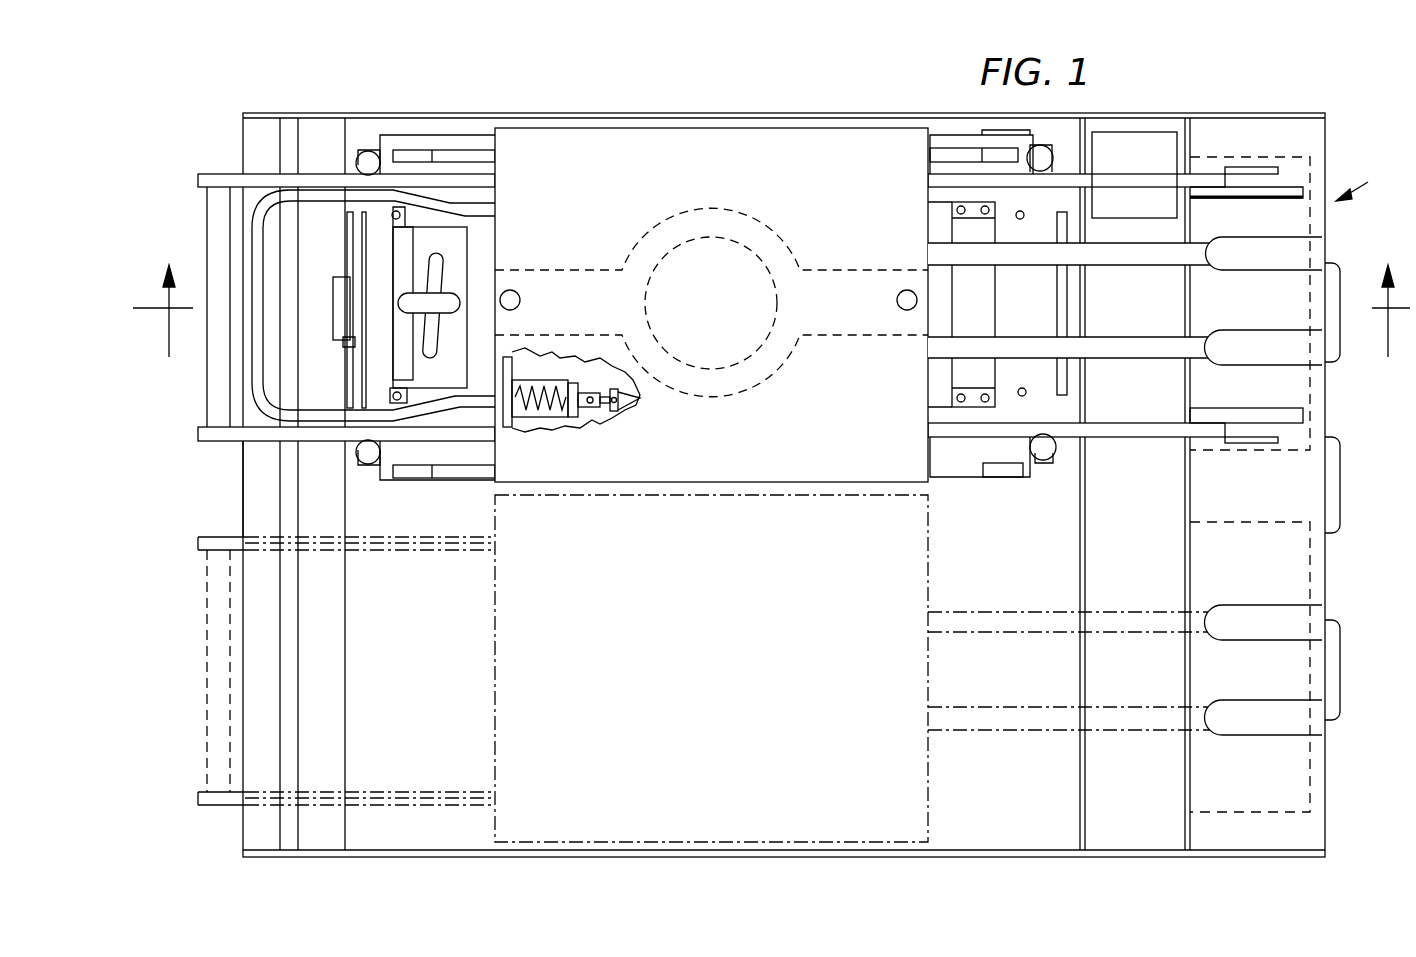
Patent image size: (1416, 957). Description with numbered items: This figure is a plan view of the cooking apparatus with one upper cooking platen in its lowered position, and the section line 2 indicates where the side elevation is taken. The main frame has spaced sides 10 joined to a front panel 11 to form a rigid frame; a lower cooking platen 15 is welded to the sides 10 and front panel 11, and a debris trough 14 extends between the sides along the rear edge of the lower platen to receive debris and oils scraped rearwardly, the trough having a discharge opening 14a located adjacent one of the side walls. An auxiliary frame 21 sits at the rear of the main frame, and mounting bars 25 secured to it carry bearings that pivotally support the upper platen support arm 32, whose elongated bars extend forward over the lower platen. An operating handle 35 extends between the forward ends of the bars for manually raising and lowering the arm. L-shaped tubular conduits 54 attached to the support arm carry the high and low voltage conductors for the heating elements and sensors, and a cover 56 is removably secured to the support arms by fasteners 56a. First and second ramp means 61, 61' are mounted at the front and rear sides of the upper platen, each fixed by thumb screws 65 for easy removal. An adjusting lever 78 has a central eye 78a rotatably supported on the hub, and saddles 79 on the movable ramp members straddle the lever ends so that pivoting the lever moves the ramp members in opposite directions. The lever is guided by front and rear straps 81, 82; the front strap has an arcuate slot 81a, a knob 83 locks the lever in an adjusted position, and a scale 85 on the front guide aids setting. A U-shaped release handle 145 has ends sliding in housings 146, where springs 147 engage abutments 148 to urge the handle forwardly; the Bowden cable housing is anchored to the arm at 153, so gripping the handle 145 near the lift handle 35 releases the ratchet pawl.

The sides 10 is at (455, 857).
The front panel 11 is at (258, 475).
The debris trough 14 is at (1148, 544).
The discharge opening 14a is at (1112, 132).
The lower cooking platen 15 is at (998, 549).
The auxiliary frame 21 is at (1365, 173).
The mounting bars 25 is at (1300, 185).
The upper platen support arm 32 is at (290, 180).
The operating handle 35 is at (218, 222).
The tubular conduits 54 is at (1160, 347).
The cover 56 is at (840, 152).
The fasteners 56a is at (906, 290).
The first ramp means 61 is at (334, 268).
The second ramp means 61' is at (1101, 308).
The thumb screws 65 is at (368, 158).
The adjusting lever 78 is at (465, 272).
The central eye 78a is at (722, 225).
The saddles 79 is at (348, 307).
The front strap 81 is at (452, 234).
The arcuate slot 81a is at (498, 330).
The rear strap 82 is at (970, 375).
The knob 83 is at (440, 300).
The scale 85 is at (412, 237).
The release handle 145 is at (258, 352).
The housings 146 is at (585, 420).
The springs 147 is at (532, 405).
The abutments 148 is at (570, 386).
The Bowden wire housing anchor 153 is at (620, 402).
The section line 2 is at (773, 311).